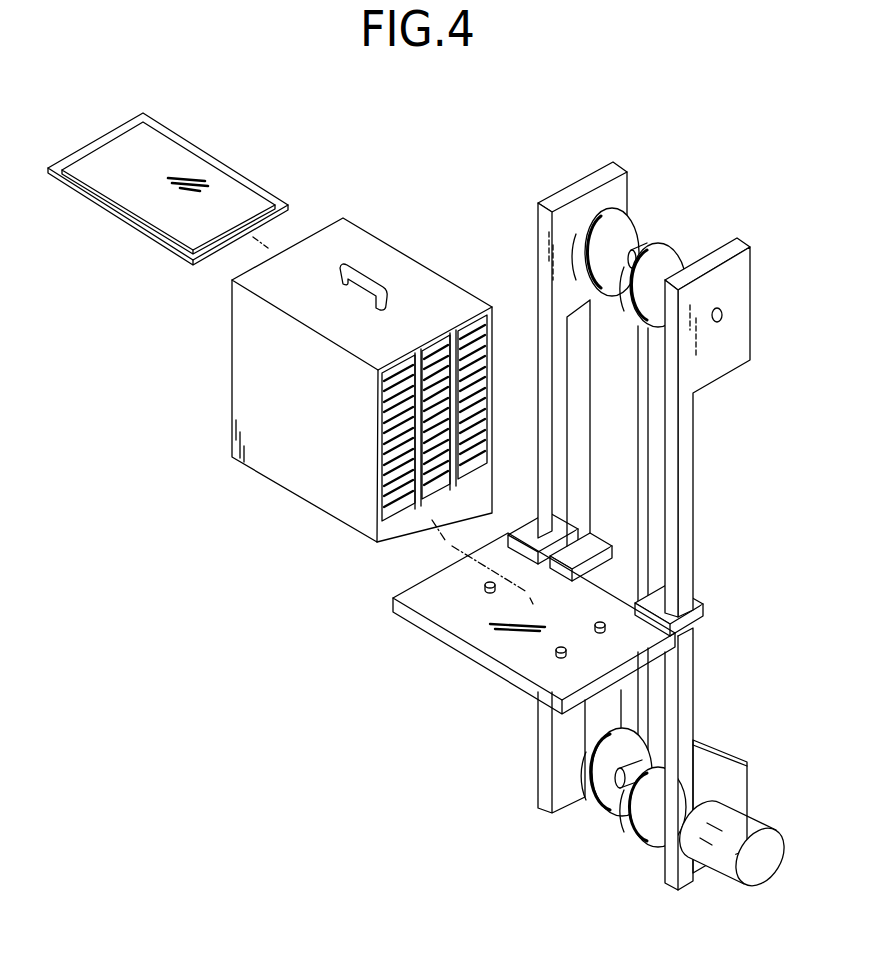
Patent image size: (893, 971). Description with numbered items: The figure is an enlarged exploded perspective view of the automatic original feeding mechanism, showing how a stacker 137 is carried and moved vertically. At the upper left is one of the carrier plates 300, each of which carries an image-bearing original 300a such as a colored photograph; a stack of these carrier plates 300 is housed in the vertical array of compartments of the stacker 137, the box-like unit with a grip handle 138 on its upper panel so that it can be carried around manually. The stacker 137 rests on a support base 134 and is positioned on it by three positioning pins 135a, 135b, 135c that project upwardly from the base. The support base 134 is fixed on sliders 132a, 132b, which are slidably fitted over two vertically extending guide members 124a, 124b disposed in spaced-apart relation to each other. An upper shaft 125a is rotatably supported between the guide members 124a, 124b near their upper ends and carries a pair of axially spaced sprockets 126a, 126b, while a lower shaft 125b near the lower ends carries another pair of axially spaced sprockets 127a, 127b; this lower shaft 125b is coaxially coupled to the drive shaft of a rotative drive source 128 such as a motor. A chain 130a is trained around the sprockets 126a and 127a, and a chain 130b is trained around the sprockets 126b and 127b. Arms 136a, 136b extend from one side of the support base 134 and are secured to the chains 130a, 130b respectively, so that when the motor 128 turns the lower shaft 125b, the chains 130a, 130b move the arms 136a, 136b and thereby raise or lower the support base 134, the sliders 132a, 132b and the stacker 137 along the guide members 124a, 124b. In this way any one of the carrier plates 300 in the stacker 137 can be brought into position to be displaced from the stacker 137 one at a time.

The carrier plate 300 is at (263, 190).
The image-bearing original 300a is at (135, 195).
The stacker 137 is at (277, 488).
The grip handle 138 is at (363, 272).
The guide member 124a is at (570, 193).
The guide member 124b is at (723, 289).
The sprocket 126a is at (650, 233).
The sprocket 126b is at (690, 260).
The upper shaft 125a is at (725, 317).
The lower shaft 125b is at (623, 788).
The chain 130a is at (590, 398).
The chain 130b is at (638, 480).
The slider 132a is at (527, 538).
The slider 132b is at (692, 630).
The arm 136a is at (594, 543).
The arm 136b is at (655, 590).
The support base 134 is at (445, 637).
The positioning pin 135a is at (485, 589).
The positioning pin 135b is at (596, 627).
The positioning pin 135c is at (556, 652).
The sprocket 127a is at (600, 805).
The sprocket 127b is at (648, 845).
The rotative drive source 128 is at (781, 845).